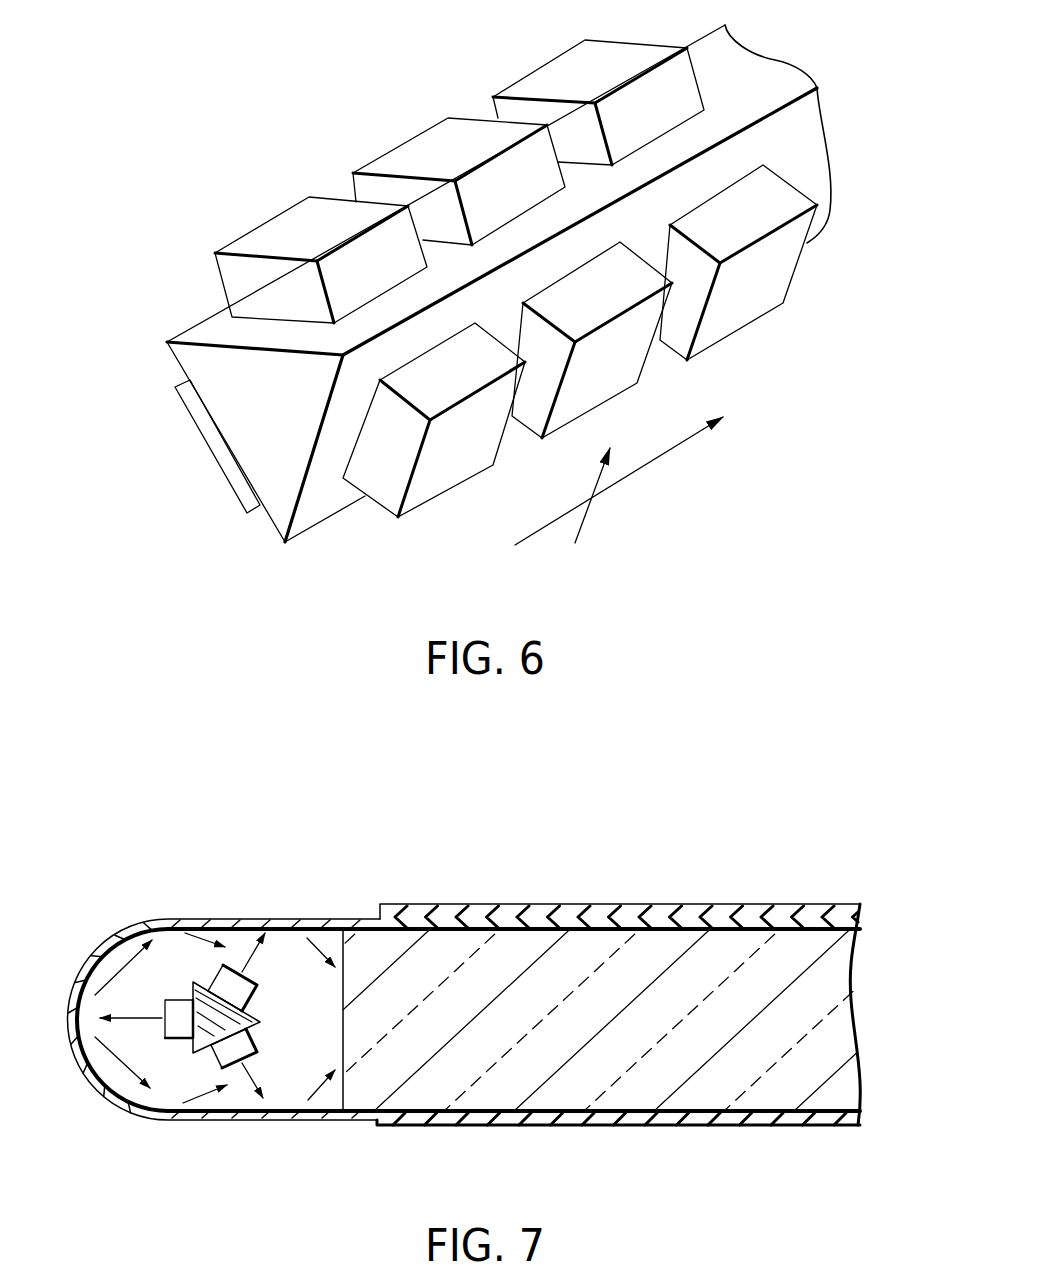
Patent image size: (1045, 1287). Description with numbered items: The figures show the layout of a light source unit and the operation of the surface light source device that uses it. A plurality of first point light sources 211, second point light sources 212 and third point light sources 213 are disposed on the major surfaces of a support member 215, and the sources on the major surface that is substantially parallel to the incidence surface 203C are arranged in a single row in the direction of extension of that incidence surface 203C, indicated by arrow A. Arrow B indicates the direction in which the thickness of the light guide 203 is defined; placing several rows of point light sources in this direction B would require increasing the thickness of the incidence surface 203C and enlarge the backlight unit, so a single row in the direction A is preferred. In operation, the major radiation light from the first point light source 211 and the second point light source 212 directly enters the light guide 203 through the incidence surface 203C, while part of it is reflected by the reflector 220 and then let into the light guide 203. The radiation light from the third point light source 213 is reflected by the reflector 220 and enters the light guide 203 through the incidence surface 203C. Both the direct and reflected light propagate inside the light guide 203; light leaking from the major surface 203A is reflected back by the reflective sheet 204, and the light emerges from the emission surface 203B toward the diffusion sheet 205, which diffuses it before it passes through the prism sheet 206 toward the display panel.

In FIG. 6, the first point light source 211 is at (432, 487).
In FIG. 7, the first point light source 211 is at (232, 980).
In FIG. 6, the second point light source 212 is at (280, 225).
In FIG. 7, the second point light source 212 is at (228, 1053).
In FIG. 6, the third point light source 213 is at (215, 458).
In FIG. 7, the third point light source 213 is at (178, 1033).
In FIG. 6, the support member 215 is at (278, 512).
In FIG. 7, the support member 215 is at (194, 1040).
In FIG. 7, the reflector 220 is at (147, 920).
In FIG. 7, the light guide 203 is at (815, 973).
In FIG. 7, the major surface 203A is at (678, 1122).
In FIG. 7, the emission surface 203B is at (659, 915).
In FIG. 7, the incidence surface 203C is at (340, 1093).
In FIG. 7, the reflective sheet 204 is at (830, 1123).
In FIG. 7, the diffusion sheet 205 is at (812, 922).
In FIG. 7, the prism sheet 206 is at (840, 910).
In FIG. 6, the direction of extension of the incidence surface A is at (655, 462).
In FIG. 6, the direction in which the thickness of the light guide is defined B is at (585, 518).